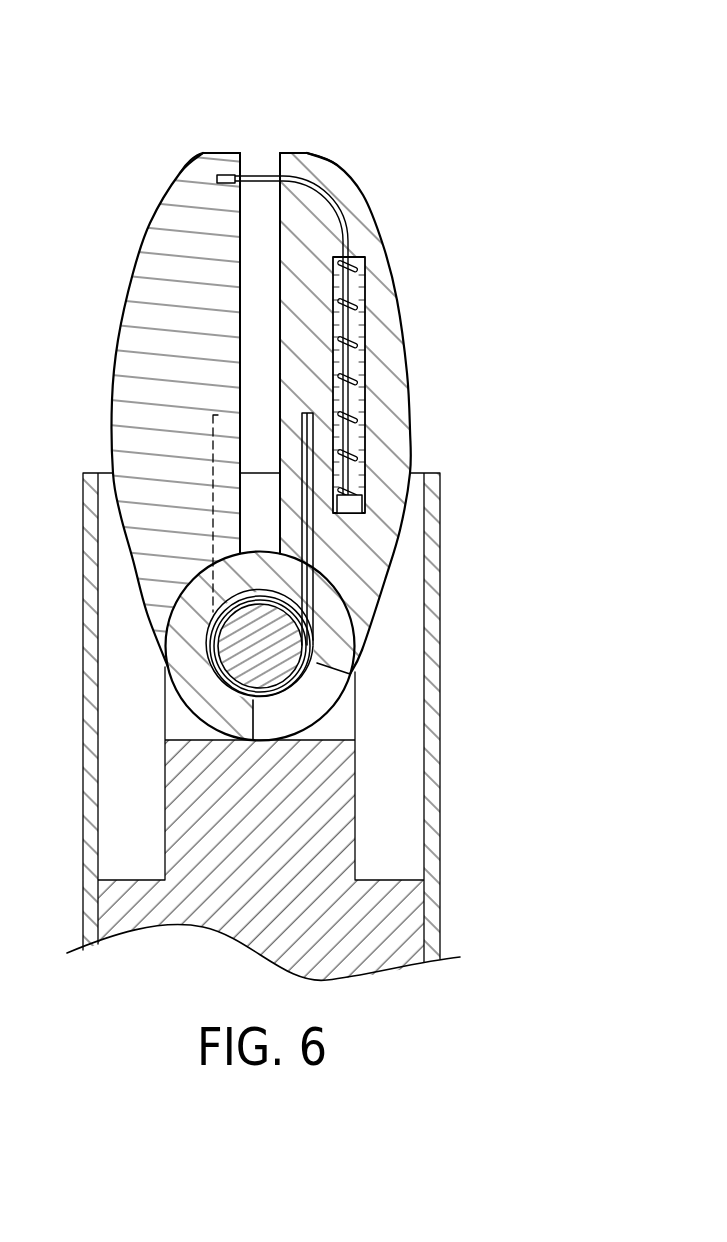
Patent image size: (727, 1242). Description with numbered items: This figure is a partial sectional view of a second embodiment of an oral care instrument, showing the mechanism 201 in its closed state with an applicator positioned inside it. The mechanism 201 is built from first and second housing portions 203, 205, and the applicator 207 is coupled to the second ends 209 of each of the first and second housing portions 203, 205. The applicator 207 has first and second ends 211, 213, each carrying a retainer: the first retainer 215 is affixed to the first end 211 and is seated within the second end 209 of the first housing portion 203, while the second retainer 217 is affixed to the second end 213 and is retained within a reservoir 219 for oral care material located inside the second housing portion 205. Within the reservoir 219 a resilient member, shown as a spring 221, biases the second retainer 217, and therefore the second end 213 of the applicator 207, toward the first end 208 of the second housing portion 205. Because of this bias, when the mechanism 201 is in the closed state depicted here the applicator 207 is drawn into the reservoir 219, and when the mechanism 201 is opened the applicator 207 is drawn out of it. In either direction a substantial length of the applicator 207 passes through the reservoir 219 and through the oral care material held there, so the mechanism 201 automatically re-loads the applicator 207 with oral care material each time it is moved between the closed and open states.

The mechanism 201 is at (135, 272).
The first housing portion 203 is at (140, 382).
The second housing portion 205 is at (373, 288).
The applicator 207 is at (267, 177).
The first end of the second housing portion 208 is at (352, 620).
The second ends of the housing portions 209 is at (173, 180).
The first end of the applicator 211 is at (252, 177).
The second end of the applicator 213 is at (347, 438).
The first retainer 215 is at (230, 177).
The second retainer 217 is at (357, 505).
The reservoir 219 is at (357, 363).
The spring 221 is at (352, 338).